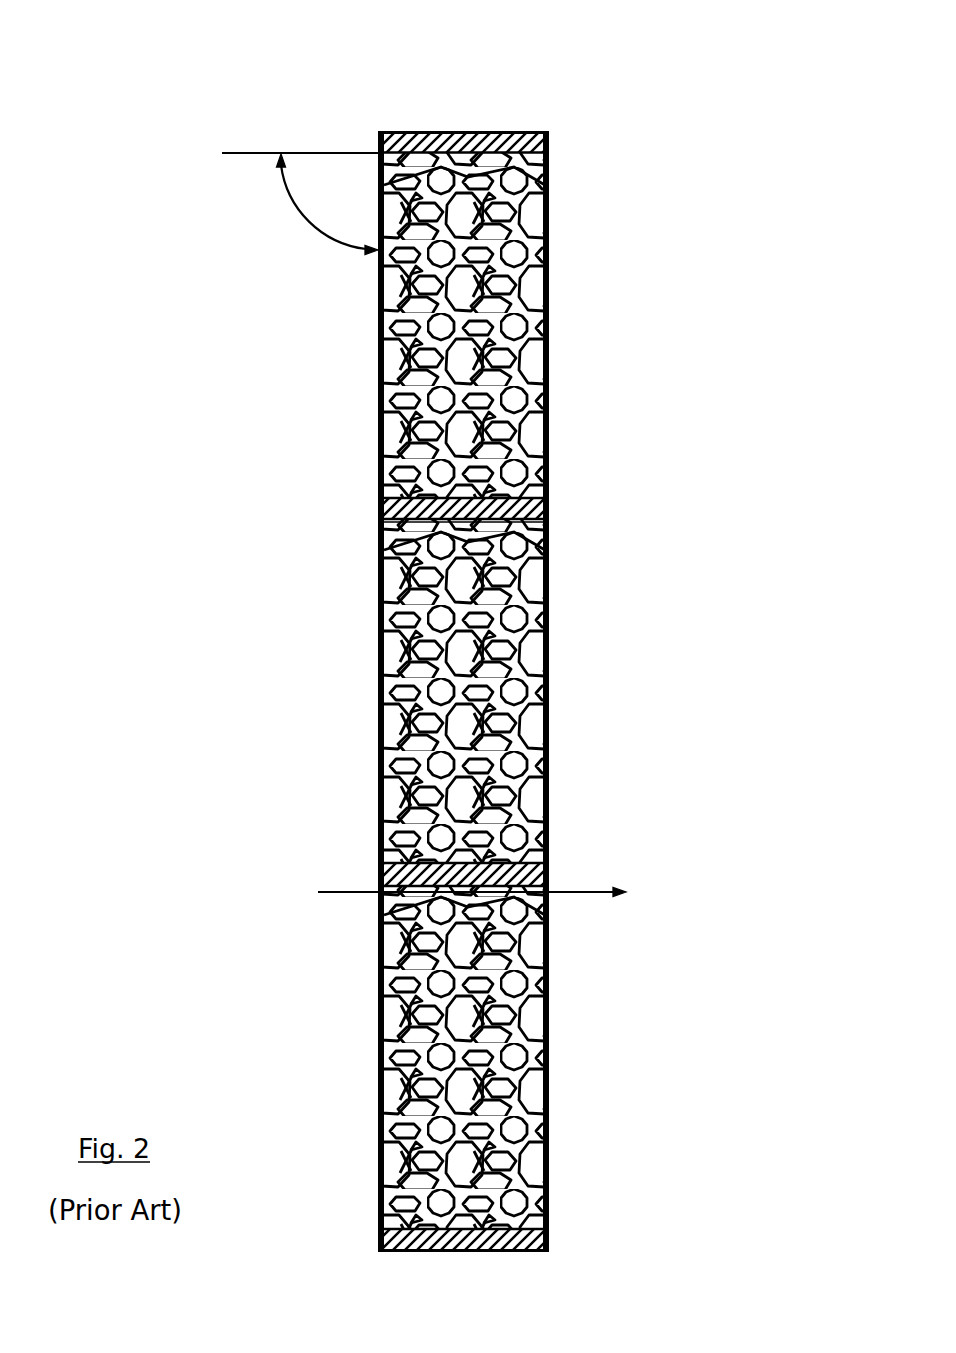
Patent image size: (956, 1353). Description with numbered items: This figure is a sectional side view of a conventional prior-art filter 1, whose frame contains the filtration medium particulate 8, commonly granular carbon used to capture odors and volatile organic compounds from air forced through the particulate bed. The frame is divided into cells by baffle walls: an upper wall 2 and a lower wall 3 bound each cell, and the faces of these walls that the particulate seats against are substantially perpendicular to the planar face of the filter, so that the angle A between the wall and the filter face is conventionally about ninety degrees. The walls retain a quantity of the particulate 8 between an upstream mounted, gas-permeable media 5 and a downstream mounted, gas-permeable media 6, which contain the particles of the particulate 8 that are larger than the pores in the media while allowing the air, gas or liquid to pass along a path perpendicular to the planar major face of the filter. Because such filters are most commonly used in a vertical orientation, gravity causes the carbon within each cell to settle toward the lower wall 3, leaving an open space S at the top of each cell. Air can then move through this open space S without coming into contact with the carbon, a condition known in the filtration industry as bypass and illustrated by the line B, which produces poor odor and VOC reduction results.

The filter 1 is at (573, 76).
The upper wall 2 is at (548, 140).
The lower wall 3 is at (383, 512).
The upstream media 5 is at (380, 836).
The downstream media 6 is at (548, 641).
The filtration medium particulate 8 is at (528, 359).
The angle A is at (301, 204).
The bypass line B is at (460, 896).
The open space S is at (533, 528).